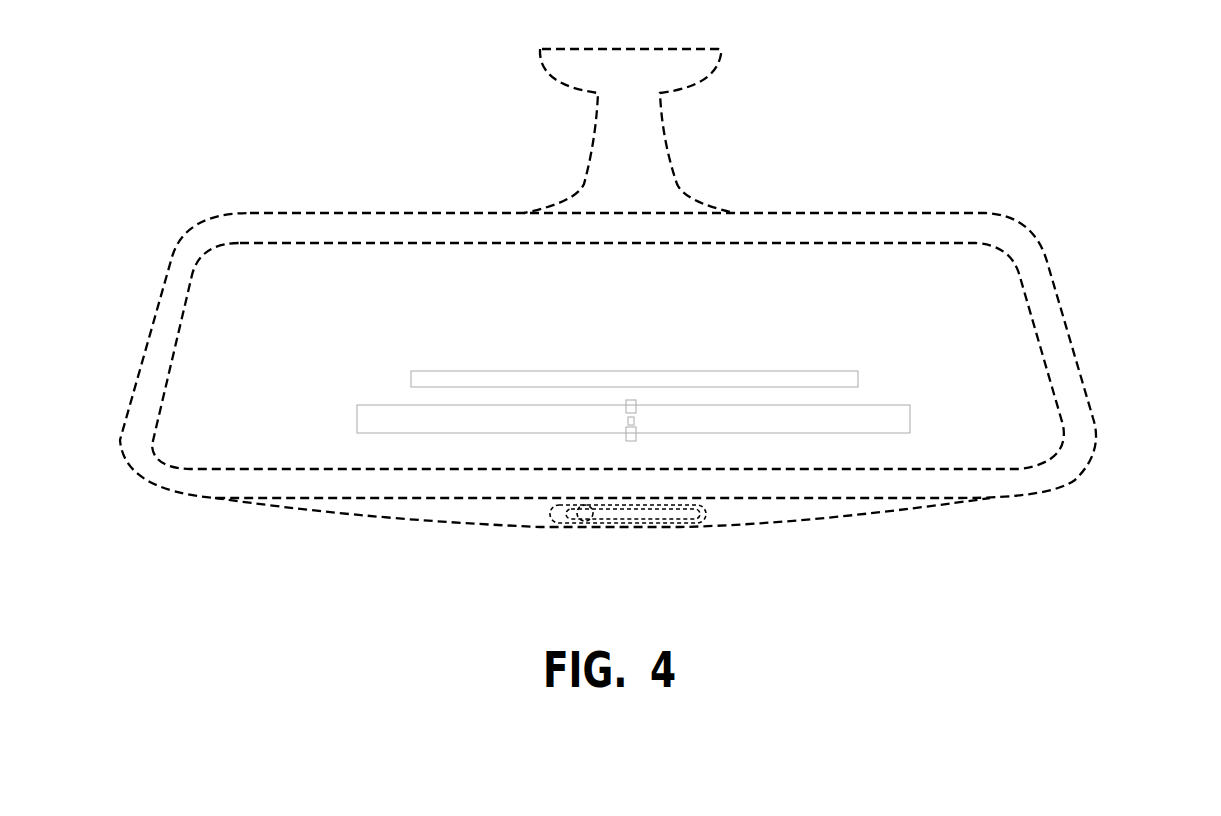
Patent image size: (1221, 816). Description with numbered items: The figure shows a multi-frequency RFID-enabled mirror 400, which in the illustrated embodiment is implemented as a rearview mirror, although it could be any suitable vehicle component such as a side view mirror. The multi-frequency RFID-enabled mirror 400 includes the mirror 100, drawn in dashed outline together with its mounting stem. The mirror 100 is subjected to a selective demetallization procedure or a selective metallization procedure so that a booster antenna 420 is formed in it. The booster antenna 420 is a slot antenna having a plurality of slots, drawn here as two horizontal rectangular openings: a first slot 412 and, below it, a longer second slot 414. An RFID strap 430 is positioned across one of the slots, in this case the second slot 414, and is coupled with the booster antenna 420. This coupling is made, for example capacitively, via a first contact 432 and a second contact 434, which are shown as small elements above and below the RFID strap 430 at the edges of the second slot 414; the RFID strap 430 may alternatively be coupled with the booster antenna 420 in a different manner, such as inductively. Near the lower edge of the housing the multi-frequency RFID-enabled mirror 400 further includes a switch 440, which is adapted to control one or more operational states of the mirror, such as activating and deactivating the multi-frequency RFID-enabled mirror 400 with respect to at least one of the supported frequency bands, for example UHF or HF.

The multi-frequency RFID-enabled mirror 400 is at (941, 56).
The mirror 100 is at (1004, 255).
The first slot 412 is at (858, 378).
The second slot 414 is at (910, 418).
The booster antenna 420 is at (1033, 445).
The RFID strap 430 is at (630, 420).
The first contact 432 is at (628, 408).
The second contact 434 is at (634, 440).
The switch 440 is at (628, 514).